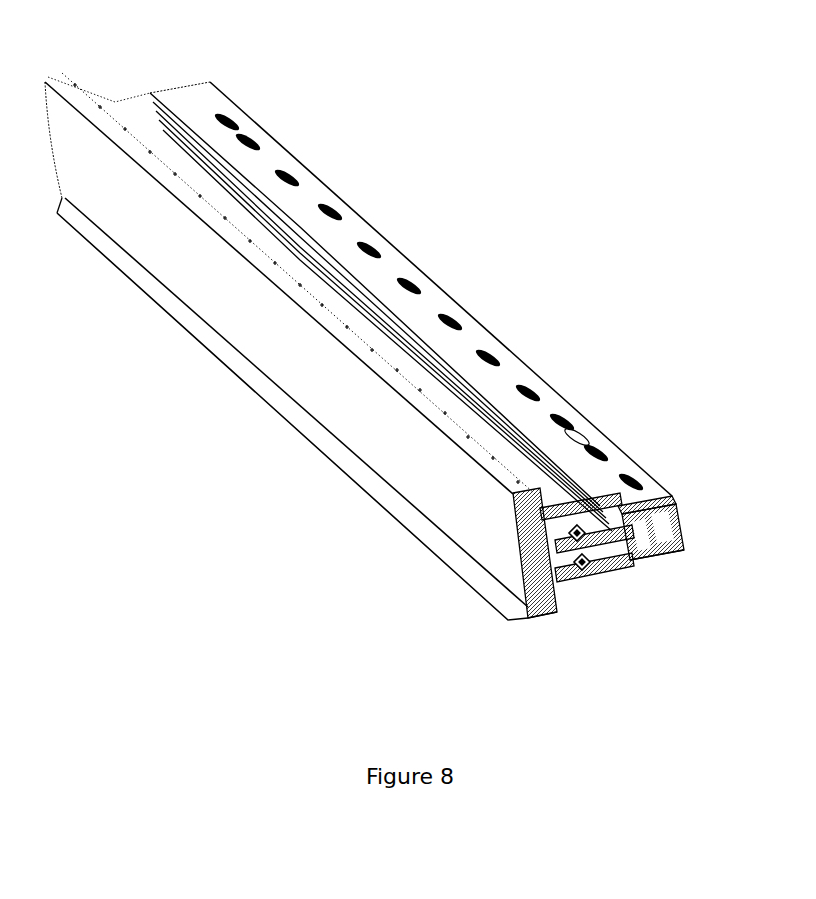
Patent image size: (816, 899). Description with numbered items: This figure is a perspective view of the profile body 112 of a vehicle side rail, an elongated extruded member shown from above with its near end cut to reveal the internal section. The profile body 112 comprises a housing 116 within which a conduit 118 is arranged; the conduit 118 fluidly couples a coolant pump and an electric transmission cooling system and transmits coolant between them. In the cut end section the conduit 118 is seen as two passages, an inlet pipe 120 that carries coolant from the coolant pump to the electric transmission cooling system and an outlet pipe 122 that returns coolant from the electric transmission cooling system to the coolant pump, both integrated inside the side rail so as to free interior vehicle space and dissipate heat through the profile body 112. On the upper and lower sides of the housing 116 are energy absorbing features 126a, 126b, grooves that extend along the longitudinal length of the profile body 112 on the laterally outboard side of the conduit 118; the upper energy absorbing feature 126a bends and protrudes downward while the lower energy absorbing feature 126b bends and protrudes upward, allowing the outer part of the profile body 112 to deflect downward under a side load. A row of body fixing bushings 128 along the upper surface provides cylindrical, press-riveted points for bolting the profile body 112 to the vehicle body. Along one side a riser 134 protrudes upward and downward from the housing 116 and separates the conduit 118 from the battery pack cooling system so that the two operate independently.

The profile body 112 is at (563, 262).
The housing 116 is at (562, 503).
The conduit 118 is at (661, 592).
The inlet pipe 120 is at (640, 566).
The outlet pipe 122 is at (585, 576).
The energy absorbing feature 126a is at (616, 500).
The energy absorbing feature 126b is at (617, 562).
The body fixing bushing 128 is at (412, 276).
The riser 134 is at (134, 128).